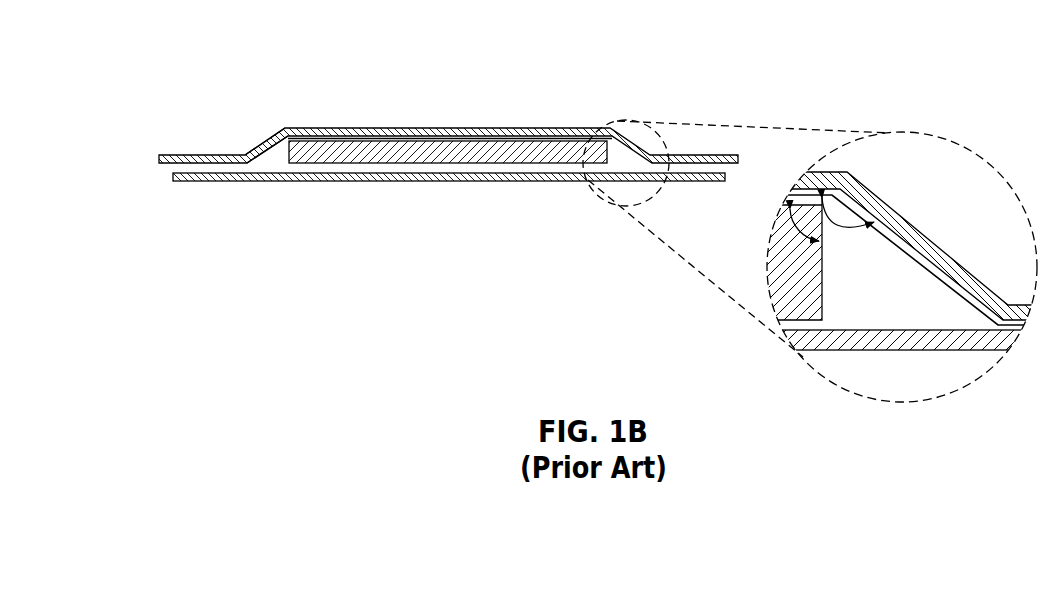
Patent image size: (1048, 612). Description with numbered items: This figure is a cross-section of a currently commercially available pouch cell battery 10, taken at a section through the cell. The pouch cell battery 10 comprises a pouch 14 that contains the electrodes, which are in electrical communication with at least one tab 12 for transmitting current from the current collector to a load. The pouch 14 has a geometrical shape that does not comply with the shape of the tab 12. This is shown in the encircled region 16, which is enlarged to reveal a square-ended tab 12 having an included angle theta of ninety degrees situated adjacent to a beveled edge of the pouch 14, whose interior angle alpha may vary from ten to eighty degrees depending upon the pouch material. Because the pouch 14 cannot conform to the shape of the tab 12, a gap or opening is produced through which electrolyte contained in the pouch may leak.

The pouch cell battery 10 is at (655, 63).
The tab 12 is at (440, 150).
The pouch 14 is at (200, 160).
The encircled region 16 is at (660, 191).